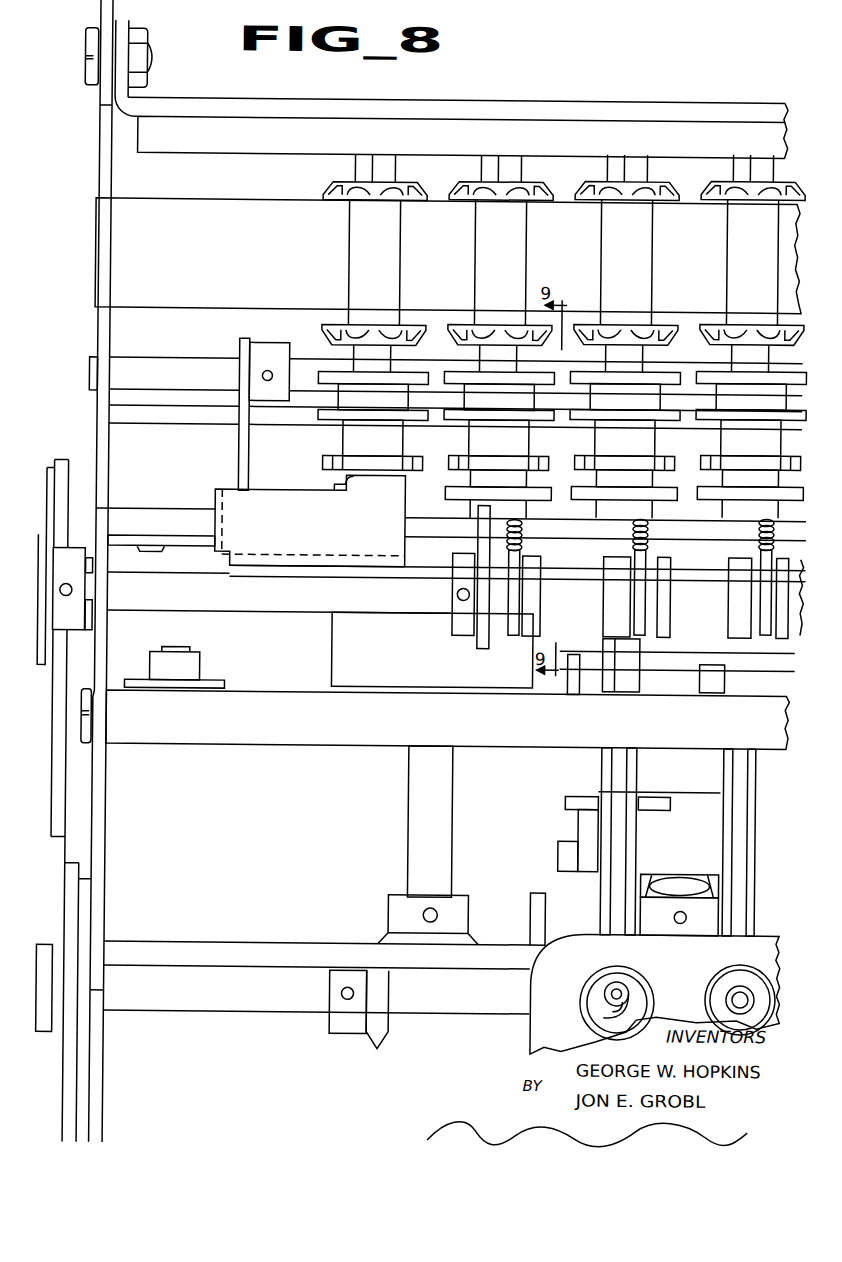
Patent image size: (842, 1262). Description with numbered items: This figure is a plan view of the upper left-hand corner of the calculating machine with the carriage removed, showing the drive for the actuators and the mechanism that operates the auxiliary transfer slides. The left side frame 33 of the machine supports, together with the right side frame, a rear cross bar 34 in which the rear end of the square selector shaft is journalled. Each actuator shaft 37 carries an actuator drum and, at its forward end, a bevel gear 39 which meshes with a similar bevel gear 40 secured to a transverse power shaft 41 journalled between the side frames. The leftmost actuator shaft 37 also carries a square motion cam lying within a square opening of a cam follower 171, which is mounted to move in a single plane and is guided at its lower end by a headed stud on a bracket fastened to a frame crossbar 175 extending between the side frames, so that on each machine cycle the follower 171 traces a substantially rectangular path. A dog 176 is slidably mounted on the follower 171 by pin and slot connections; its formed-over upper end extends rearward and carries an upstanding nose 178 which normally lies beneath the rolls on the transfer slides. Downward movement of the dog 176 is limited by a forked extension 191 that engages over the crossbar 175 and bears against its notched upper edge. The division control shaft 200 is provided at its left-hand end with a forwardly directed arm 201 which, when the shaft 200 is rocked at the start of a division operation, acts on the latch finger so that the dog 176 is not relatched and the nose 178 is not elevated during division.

The left side frame 33 is at (95, 788).
The cross bar 34 is at (644, 111).
The actuator shaft 37 is at (418, 790).
The bevel gear 39 is at (392, 941).
The bevel gear 40 is at (386, 1036).
The transverse power shaft 41 is at (265, 1009).
The cam follower 171 is at (317, 571).
The frame crossbar 175 is at (148, 518).
The dog 176 is at (317, 506).
The nose 178 is at (384, 476).
The forked extension 191 is at (217, 502).
The division control shaft 200 is at (223, 372).
The arm 201 is at (242, 446).